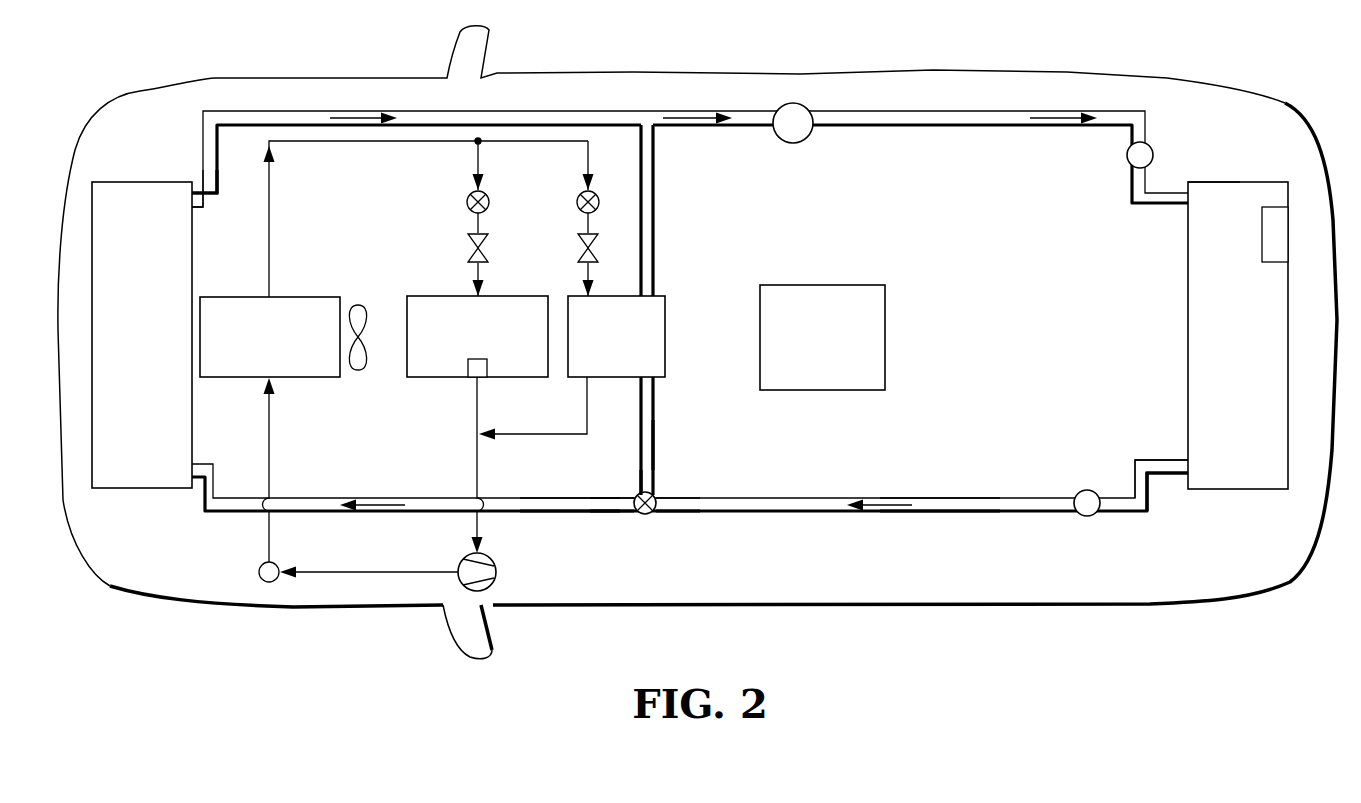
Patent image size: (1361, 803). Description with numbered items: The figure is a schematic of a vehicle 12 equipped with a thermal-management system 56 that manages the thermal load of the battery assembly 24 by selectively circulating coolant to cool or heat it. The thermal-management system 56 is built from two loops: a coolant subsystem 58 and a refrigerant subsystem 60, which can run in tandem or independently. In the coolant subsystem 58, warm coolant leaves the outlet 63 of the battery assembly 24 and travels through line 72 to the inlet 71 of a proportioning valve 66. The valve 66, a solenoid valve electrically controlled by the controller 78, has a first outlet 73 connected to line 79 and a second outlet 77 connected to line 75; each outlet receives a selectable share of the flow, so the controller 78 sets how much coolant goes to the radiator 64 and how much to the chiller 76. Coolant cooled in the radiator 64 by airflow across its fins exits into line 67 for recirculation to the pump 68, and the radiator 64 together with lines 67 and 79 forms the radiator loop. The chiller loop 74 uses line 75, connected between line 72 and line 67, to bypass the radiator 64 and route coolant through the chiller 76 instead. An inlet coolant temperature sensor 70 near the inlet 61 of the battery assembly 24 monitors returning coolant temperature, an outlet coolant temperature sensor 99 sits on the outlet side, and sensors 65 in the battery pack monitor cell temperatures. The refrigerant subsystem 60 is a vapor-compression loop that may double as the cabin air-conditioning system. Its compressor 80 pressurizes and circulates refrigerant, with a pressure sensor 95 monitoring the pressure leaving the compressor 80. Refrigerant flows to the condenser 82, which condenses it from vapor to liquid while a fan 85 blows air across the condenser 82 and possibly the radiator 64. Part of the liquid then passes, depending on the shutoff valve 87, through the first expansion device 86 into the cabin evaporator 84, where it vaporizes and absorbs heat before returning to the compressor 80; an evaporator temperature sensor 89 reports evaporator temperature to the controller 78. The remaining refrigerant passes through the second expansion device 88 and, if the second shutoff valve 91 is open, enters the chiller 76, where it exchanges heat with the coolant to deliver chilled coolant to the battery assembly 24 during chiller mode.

The vehicle 12 is at (543, 75).
The battery assembly 24 is at (1238, 335).
The thermal-management system 56 is at (762, 85).
The coolant subsystem 58 is at (920, 522).
The refrigerant subsystem 60 is at (412, 240).
The inlet 61 is at (1215, 182).
The outlet 63 is at (1185, 460).
The radiator 64 is at (142, 335).
The sensors 65 is at (1289, 234).
The proportioning valve 66 is at (648, 514).
The line 67 is at (217, 192).
The pump 68 is at (805, 141).
The inlet coolant temperature sensor 70 is at (1127, 155).
The inlet 71 is at (658, 500).
The line 72 is at (942, 497).
The first outlet 73 is at (636, 507).
The chiller loop 74 is at (685, 345).
The line 75 is at (657, 440).
The chiller 76 is at (616, 336).
The second outlet 77 is at (640, 494).
The controller 78 is at (822, 337).
The line 79 is at (565, 511).
The compressor 80 is at (462, 562).
The condenser 82 is at (270, 337).
The cabin evaporator 84 is at (440, 296).
The fan 85 is at (356, 303).
The first expansion device 86 is at (468, 250).
The shutoff valve 87 is at (466, 202).
The second expansion device 88 is at (578, 250).
The evaporator temperature sensor 89 is at (468, 366).
The second shutoff valve 91 is at (576, 202).
The pressure sensor 95 is at (262, 570).
The outlet coolant temperature sensor 99 is at (1084, 490).